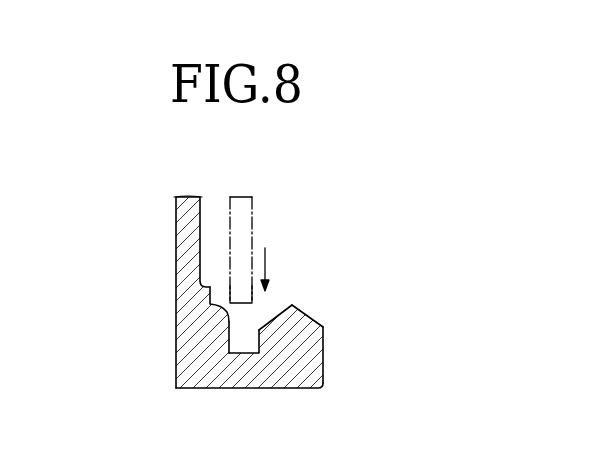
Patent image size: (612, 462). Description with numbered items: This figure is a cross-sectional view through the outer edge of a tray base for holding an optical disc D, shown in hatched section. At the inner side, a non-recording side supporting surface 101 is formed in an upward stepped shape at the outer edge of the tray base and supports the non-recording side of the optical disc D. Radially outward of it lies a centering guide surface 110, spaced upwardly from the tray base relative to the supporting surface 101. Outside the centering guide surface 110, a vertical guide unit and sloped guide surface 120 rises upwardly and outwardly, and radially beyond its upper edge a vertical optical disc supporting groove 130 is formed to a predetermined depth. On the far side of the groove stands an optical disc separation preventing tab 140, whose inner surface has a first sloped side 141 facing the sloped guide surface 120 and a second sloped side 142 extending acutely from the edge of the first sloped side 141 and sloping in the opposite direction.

The non-recording side supporting surface 101 is at (200, 283).
The centering guide surface 110 is at (212, 306).
The sloped guide surface 120 is at (226, 311).
The vertical optical disc supporting groove 130 is at (244, 353).
The optical disc separation preventing tab 140 is at (332, 303).
The first sloped side 141 is at (277, 310).
The second sloped side 142 is at (306, 314).
The optical disc D is at (252, 215).